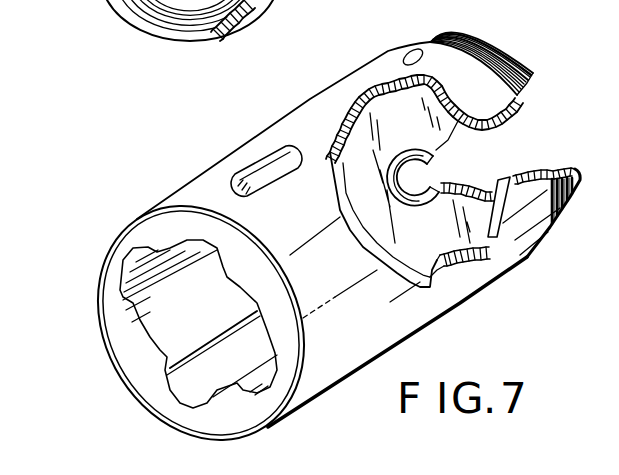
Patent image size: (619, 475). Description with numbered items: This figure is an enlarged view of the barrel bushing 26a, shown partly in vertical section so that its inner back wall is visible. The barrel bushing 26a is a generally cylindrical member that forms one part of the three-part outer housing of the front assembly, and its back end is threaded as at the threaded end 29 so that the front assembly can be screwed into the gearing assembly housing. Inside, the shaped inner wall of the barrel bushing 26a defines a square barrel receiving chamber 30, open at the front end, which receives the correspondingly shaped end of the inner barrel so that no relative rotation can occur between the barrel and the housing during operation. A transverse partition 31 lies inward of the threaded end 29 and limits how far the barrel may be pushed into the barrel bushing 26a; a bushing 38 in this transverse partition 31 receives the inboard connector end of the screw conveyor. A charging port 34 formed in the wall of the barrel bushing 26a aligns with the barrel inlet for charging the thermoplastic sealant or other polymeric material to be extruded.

The barrel bushing 26a is at (326, 115).
The threaded end 29 is at (578, 186).
The square barrel receiving chamber 30 is at (137, 277).
The transverse partition 31 is at (464, 225).
The charging port 34 is at (262, 165).
The bushing 38 is at (405, 182).